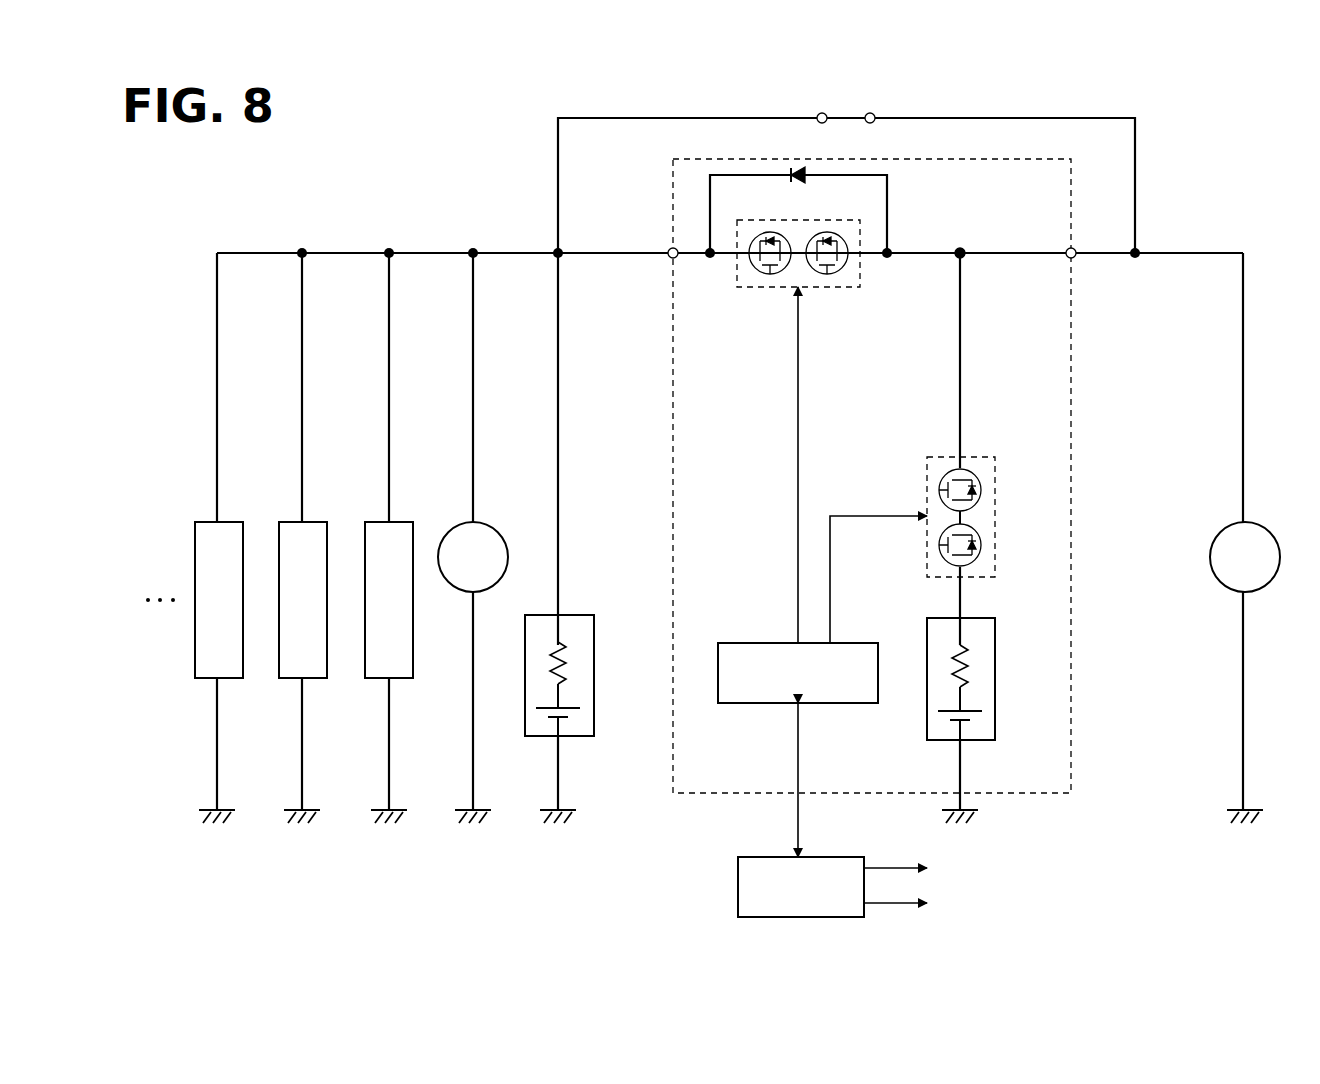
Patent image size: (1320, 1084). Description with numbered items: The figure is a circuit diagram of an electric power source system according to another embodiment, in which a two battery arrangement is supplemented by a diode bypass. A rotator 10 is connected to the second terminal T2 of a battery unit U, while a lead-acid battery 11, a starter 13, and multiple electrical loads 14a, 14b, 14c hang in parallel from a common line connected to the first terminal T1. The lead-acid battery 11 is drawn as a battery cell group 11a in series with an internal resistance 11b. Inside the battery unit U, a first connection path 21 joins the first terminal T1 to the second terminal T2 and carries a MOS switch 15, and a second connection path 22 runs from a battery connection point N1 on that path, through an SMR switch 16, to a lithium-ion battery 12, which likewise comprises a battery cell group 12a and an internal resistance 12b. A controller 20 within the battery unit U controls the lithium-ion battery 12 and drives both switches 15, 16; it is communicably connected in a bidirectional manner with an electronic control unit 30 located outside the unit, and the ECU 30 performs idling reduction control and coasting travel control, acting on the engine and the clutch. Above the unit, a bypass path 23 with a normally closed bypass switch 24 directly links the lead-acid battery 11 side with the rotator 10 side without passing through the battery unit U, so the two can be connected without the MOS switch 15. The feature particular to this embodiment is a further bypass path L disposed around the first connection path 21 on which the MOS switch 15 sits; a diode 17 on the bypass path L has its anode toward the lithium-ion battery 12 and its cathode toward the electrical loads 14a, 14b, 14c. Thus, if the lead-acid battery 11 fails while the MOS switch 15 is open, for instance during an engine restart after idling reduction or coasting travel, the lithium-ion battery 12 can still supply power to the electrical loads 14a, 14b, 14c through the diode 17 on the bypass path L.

The rotator 10 is at (1266, 524).
The lead-acid battery 11 is at (598, 538).
The battery cell group 11a is at (578, 710).
The internal resistance 11b is at (575, 668).
The lithium-ion battery 12 is at (999, 695).
The battery cell group 12a is at (978, 712).
The internal resistance 12b is at (975, 668).
The starter 13 is at (498, 524).
The electrical load 14a is at (399, 520).
The electrical load 14b is at (314, 520).
The electrical load 14c is at (229, 520).
The MOS switch 15 is at (773, 220).
The SMR switch 16 is at (998, 466).
The diode 17 is at (801, 179).
The controller 20 is at (756, 641).
The first connection path 21 is at (900, 250).
The second connection path 22 is at (958, 328).
The bypass path 23 is at (990, 114).
The bypass switch 24 is at (847, 112).
The electronic control unit 30 is at (758, 855).
The bypass path L is at (889, 188).
The battery connection point N1 is at (962, 250).
The first terminal T1 is at (670, 250).
The second terminal T2 is at (1075, 250).
The battery unit U is at (1075, 357).